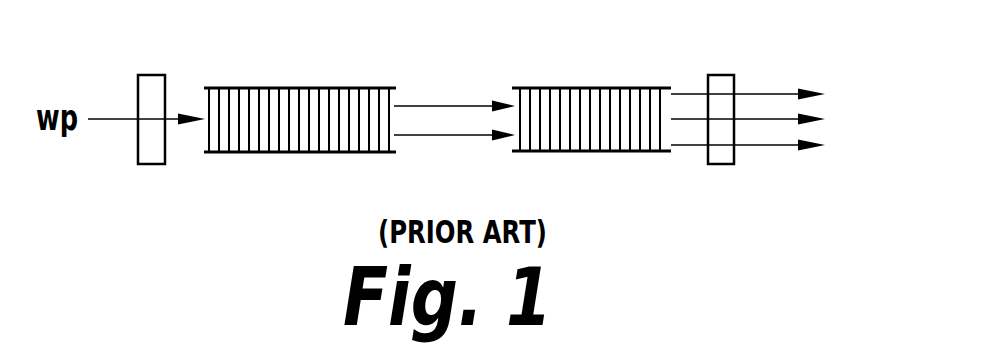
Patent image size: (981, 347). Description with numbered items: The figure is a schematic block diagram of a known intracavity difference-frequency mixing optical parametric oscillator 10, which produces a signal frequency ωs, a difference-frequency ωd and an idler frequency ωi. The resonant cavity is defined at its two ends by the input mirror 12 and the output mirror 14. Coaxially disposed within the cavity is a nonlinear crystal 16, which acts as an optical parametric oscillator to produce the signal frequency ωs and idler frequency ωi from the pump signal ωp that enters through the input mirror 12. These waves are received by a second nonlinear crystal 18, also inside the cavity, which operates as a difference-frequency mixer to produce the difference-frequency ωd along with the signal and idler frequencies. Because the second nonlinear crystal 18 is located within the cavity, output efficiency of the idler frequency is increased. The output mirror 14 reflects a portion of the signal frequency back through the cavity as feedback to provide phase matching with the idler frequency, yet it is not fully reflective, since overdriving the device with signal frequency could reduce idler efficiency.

The intracavity difference-frequency mixing optical parametric oscillator 10 is at (408, 54).
The input mirror 12 is at (157, 75).
The output mirror 14 is at (725, 75).
The nonlinear crystal 16 is at (295, 88).
The second nonlinear crystal 18 is at (597, 88).